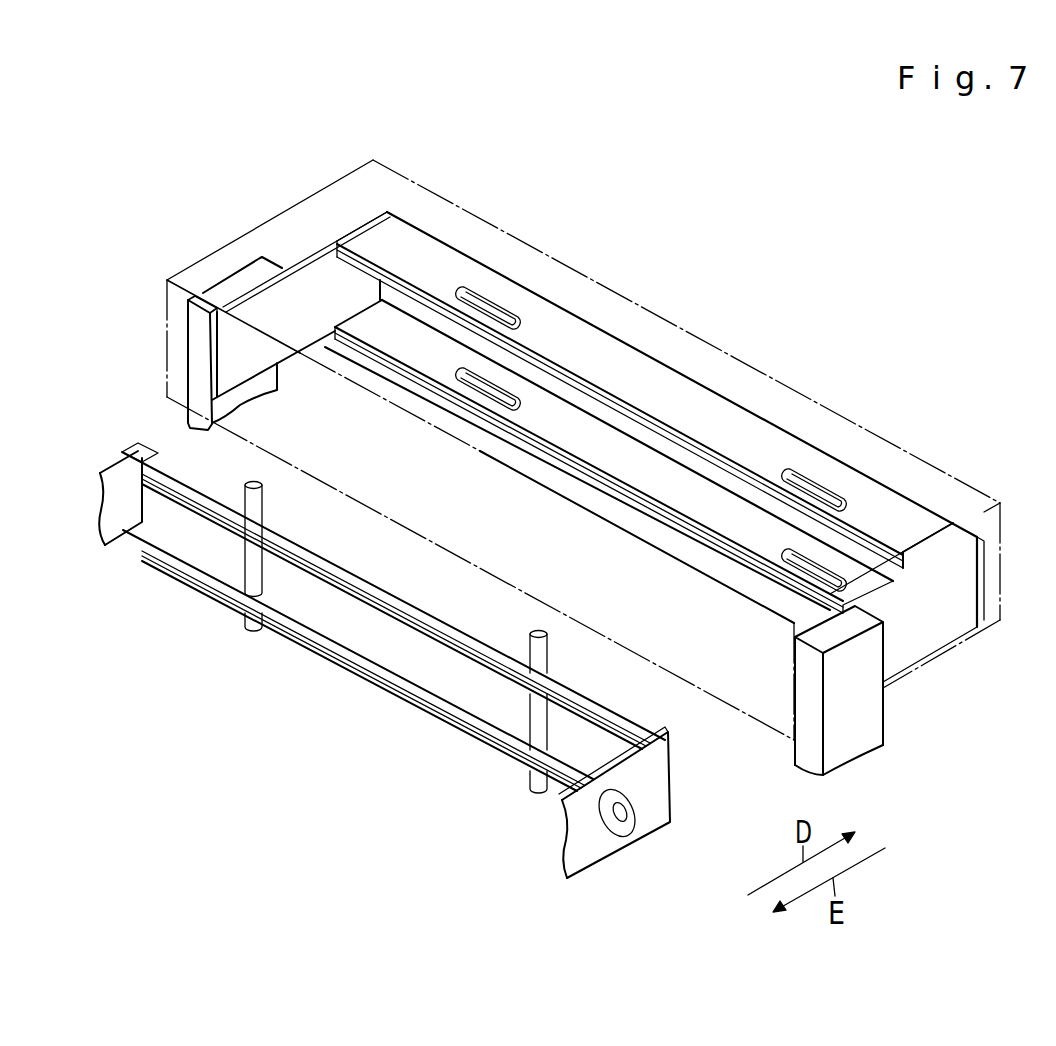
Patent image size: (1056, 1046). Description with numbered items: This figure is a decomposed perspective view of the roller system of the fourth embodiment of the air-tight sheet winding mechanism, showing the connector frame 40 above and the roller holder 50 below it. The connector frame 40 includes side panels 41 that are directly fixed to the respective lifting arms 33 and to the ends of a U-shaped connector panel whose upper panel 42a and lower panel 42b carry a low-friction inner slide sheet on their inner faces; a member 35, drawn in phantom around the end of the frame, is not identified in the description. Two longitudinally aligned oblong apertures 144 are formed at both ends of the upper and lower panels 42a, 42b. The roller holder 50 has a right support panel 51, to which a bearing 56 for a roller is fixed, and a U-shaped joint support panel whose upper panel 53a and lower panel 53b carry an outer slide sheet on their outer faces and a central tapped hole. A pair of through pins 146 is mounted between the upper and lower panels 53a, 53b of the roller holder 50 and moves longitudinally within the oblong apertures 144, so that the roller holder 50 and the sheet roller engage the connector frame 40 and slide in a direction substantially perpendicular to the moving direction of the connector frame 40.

The lifting arm 33 is at (200, 293).
The base body 35 is at (970, 478).
The connector frame 40 is at (845, 450).
The side panel 41 is at (300, 257).
The upper panel 42a is at (432, 243).
The lower panel 42b is at (475, 376).
The oblong aperture 144 is at (520, 316).
The through pin 146 is at (247, 612).
The roller holder 50 is at (424, 660).
The right support panel 51 is at (672, 790).
The upper panel 53a is at (345, 587).
The lower panel 53b is at (428, 695).
The bearing 56 is at (640, 810).